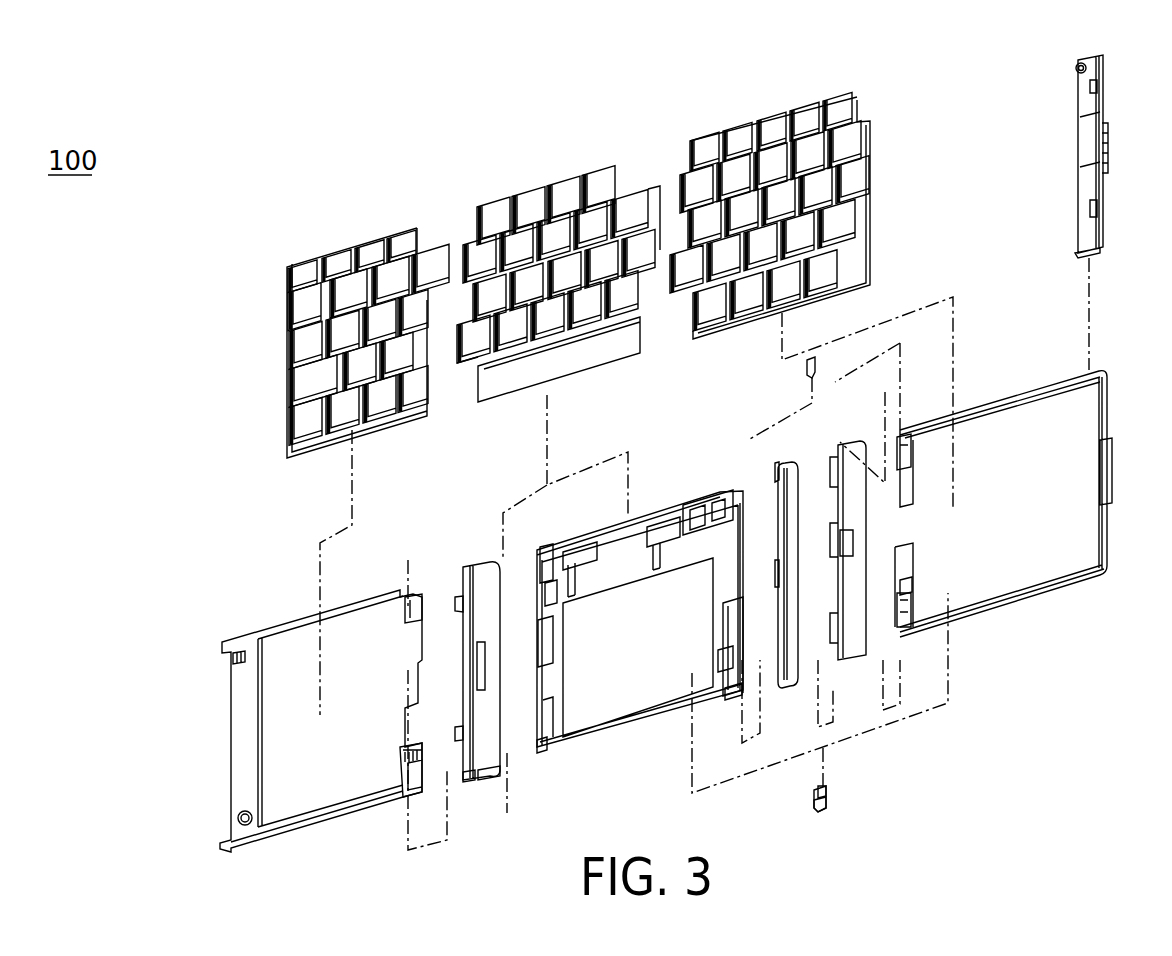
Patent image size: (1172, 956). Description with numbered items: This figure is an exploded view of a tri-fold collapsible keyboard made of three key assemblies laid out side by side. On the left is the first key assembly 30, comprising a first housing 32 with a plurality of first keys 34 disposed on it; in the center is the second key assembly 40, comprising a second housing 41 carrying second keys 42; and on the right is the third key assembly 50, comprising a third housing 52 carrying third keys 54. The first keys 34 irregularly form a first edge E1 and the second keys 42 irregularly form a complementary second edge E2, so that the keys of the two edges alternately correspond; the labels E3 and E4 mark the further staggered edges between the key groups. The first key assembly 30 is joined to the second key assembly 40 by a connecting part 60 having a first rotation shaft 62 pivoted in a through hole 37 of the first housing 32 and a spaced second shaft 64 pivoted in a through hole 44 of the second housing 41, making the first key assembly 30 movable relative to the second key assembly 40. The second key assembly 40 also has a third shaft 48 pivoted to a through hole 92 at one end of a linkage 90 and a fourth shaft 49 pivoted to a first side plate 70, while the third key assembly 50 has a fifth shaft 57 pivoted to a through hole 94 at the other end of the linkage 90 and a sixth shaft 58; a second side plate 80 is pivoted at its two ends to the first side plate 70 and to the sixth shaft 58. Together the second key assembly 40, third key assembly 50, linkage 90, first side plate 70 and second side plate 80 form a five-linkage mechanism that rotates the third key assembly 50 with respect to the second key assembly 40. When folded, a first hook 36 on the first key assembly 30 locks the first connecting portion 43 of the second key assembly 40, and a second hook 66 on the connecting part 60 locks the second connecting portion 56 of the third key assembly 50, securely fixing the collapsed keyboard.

The first key assembly 30 is at (243, 520).
The first housing 32 is at (290, 657).
The first keys 34 is at (345, 359).
The first hook 36 is at (231, 655).
The through hole 37 is at (410, 793).
The second key assembly 40 is at (676, 392).
The second housing 41 is at (643, 597).
The second keys 42 is at (573, 353).
The first connecting portion 43 is at (702, 505).
The through hole 44 is at (545, 748).
The third shaft 48 is at (728, 648).
The fourth shaft 49 is at (740, 697).
The third key assembly 50 is at (1036, 285).
The third housing 52 is at (1007, 440).
The third keys 54 is at (845, 268).
The second connecting portion 56 is at (1085, 88).
The fifth shaft 57 is at (903, 590).
The sixth shaft 58 is at (898, 626).
The connecting part 60 is at (476, 556).
The first rotation shaft 62 is at (470, 782).
The second shaft 64 is at (485, 782).
The second hook 66 is at (455, 605).
The first side plate 70 is at (785, 470).
The second side plate 80 is at (855, 441).
The linkage 90 is at (803, 362).
The through hole 92 is at (817, 810).
The through hole 94 is at (824, 807).
The first edge E1 is at (440, 263).
The second edge E2 is at (462, 267).
The third key area E3 is at (658, 207).
The fourth key area E4 is at (675, 193).